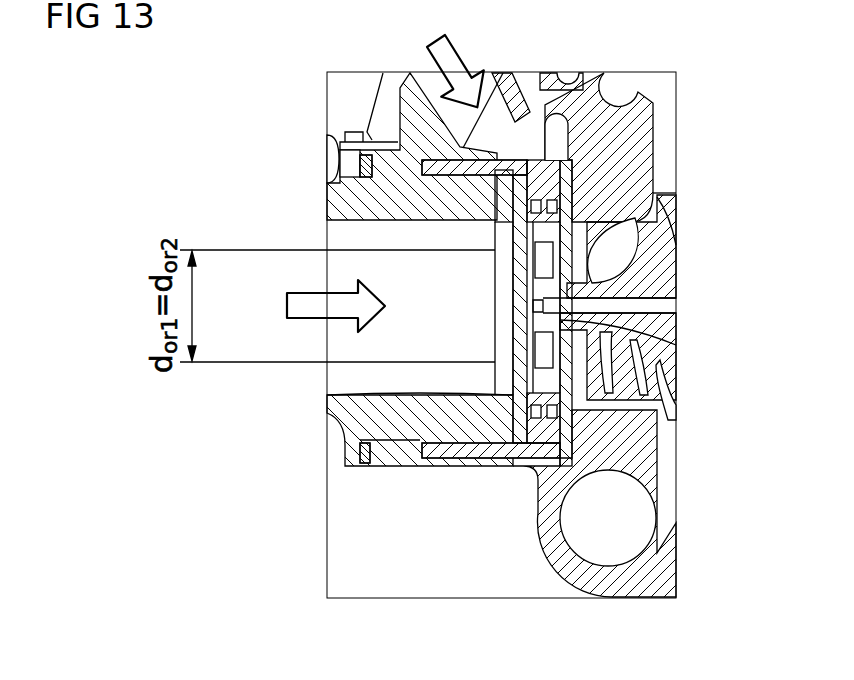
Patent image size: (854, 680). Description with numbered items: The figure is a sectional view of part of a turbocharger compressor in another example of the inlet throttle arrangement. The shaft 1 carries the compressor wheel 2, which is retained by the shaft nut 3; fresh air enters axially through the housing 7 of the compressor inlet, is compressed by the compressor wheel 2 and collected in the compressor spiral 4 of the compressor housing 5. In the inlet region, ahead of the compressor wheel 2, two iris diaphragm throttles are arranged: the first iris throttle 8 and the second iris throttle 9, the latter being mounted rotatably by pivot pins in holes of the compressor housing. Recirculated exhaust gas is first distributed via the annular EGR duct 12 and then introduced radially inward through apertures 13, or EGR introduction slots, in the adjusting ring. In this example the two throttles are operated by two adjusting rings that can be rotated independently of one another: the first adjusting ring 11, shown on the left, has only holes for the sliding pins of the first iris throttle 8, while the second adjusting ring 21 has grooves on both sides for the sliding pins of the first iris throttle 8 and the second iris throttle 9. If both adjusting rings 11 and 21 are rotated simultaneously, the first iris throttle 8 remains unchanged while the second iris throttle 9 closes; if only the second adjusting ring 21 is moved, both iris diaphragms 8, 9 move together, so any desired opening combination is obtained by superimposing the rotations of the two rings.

The shaft 1 is at (660, 305).
The compressor wheel 2 is at (660, 257).
The shaft nut 3 is at (645, 337).
The compressor spiral 4 is at (617, 521).
The compressor housing 5 is at (622, 149).
The housing of the compressor inlet 7 is at (360, 200).
The first iris throttle 8 is at (515, 368).
The second iris throttle 9 is at (563, 413).
The first adjusting ring 11 is at (517, 406).
The annular EGR duct 12 is at (490, 458).
The apertures 13 is at (540, 262).
The second adjusting ring 21 is at (540, 180).